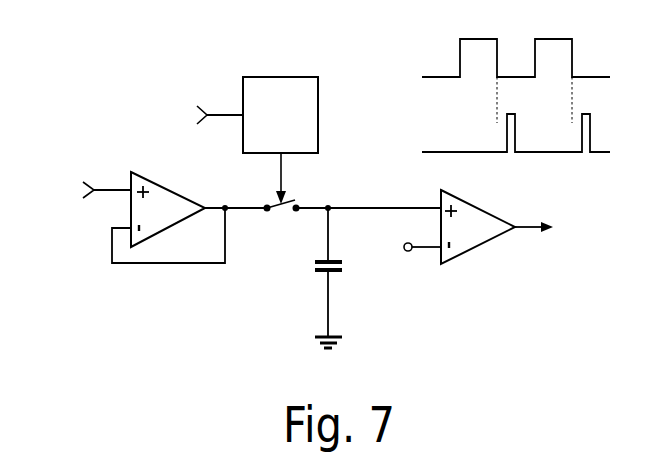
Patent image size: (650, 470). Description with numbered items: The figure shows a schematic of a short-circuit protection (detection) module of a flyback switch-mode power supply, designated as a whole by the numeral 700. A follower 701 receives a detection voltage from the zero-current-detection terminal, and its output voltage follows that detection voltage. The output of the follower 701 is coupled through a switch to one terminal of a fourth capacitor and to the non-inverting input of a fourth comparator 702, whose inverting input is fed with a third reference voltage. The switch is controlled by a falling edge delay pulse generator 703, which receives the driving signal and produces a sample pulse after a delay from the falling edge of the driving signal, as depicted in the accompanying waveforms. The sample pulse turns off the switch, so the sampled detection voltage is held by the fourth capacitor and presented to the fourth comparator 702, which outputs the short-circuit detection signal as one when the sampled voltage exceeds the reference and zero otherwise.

The zero current detection circuit 700 is at (90, 38).
The follower 701 is at (172, 191).
The fourth comparator 702 is at (482, 208).
The falling edge delay pulse generator 703 is at (283, 77).